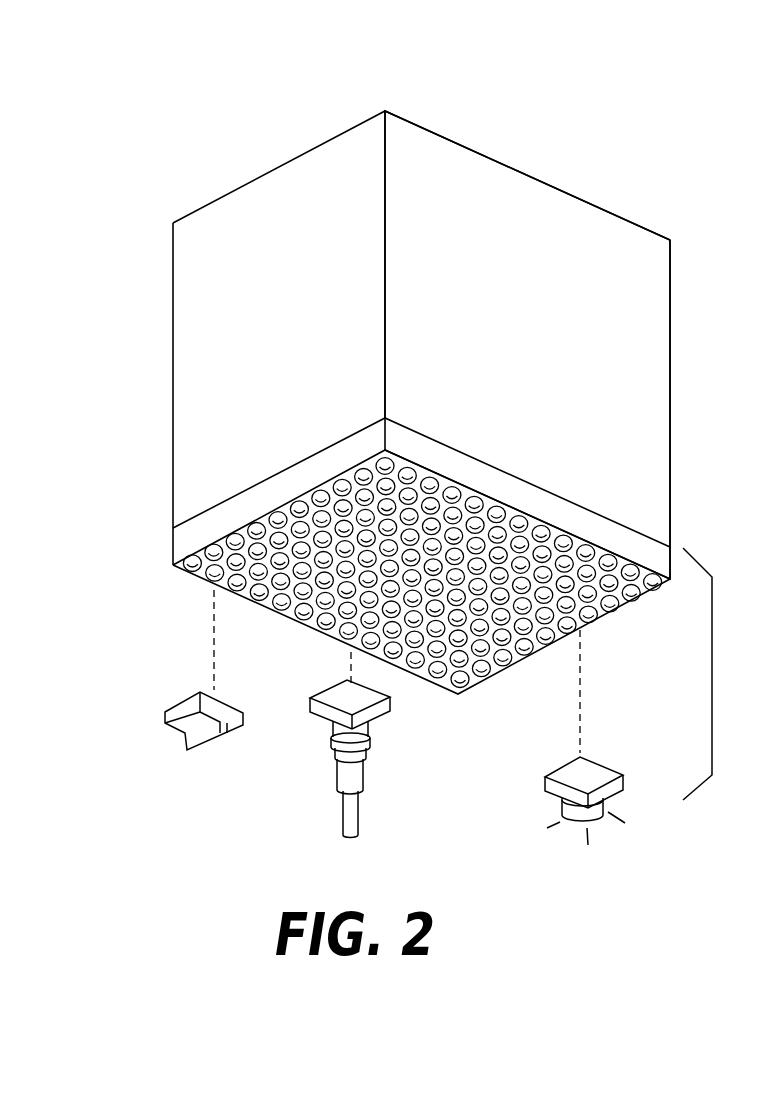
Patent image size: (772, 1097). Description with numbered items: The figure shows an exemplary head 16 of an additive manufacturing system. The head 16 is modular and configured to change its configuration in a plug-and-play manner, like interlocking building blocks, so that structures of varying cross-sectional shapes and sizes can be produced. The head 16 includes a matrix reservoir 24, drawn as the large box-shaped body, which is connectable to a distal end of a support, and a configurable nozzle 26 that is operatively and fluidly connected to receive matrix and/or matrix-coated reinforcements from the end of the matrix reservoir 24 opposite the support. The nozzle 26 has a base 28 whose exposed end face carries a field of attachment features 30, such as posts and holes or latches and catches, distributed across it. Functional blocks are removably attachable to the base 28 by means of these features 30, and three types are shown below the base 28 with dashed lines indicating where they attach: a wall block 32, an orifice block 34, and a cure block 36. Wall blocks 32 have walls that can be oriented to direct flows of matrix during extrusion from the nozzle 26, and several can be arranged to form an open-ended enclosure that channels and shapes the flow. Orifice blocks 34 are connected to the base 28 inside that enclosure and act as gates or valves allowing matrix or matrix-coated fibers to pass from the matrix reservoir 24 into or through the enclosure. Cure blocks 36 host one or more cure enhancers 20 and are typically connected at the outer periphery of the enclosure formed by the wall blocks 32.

The head 16 is at (201, 146).
The cure enhancer 20 is at (627, 840).
The matrix reservoir 24 is at (540, 360).
The configurable nozzle 26 is at (712, 660).
The base 28 is at (188, 540).
The attachment features 30 is at (553, 537).
The wall block 32 is at (238, 727).
The orifice block 34 is at (382, 717).
The cure block 36 is at (623, 778).